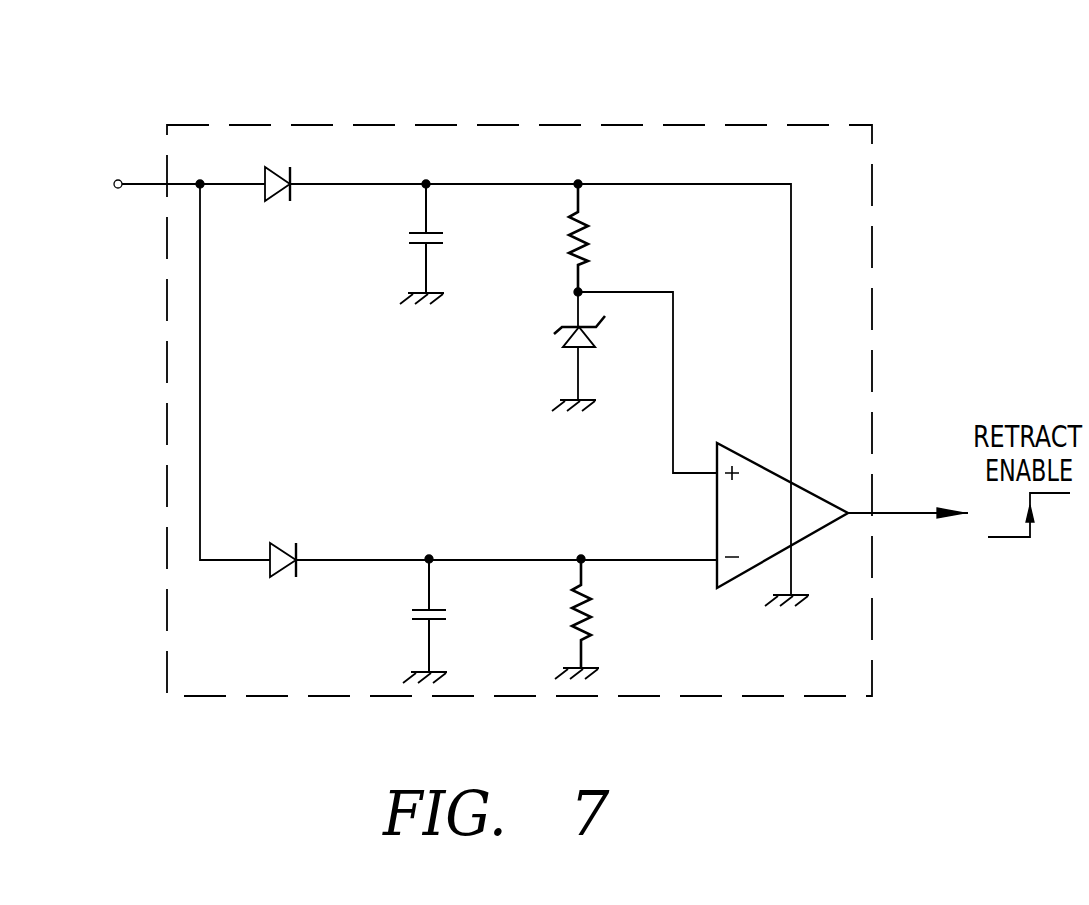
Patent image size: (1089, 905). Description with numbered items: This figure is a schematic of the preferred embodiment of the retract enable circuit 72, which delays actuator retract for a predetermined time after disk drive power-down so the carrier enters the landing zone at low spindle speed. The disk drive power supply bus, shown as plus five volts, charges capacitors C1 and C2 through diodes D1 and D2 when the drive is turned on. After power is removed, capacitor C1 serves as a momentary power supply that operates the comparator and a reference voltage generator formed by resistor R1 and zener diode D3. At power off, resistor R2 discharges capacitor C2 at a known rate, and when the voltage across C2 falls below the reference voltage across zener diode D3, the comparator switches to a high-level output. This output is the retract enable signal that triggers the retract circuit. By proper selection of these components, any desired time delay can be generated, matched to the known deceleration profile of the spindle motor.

The retract enable circuit 72 is at (488, 125).
The diode D1 is at (275, 168).
The diode D2 is at (279, 544).
The zener diode D3 is at (593, 351).
The capacitor C1 is at (407, 244).
The capacitor C2 is at (411, 621).
The resistor R1 is at (596, 238).
The resistor R2 is at (592, 619).